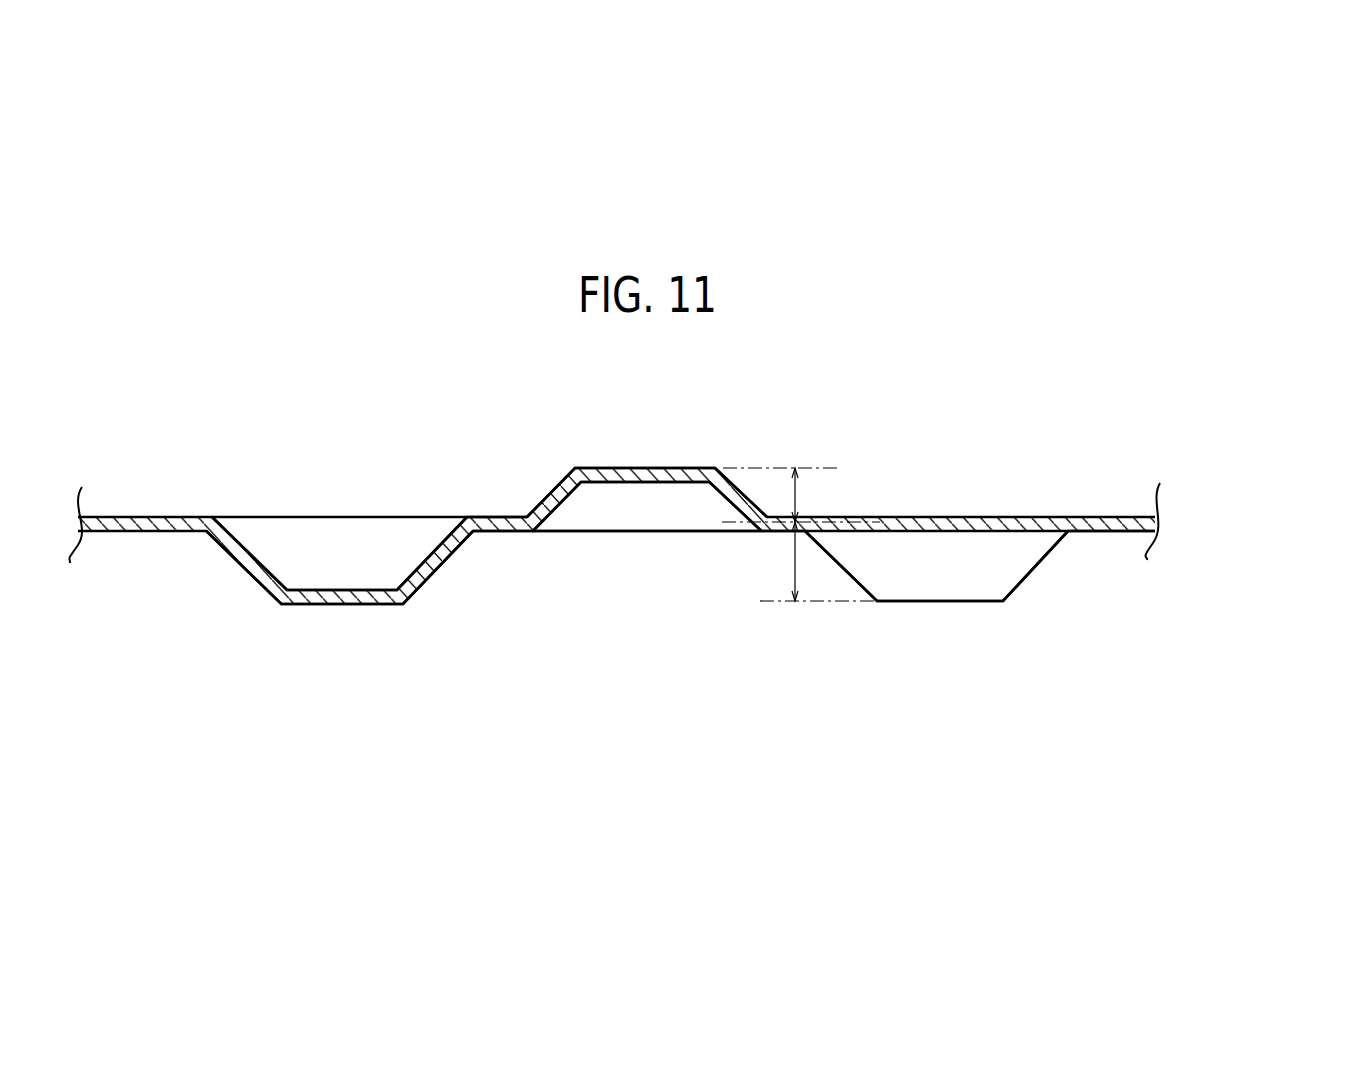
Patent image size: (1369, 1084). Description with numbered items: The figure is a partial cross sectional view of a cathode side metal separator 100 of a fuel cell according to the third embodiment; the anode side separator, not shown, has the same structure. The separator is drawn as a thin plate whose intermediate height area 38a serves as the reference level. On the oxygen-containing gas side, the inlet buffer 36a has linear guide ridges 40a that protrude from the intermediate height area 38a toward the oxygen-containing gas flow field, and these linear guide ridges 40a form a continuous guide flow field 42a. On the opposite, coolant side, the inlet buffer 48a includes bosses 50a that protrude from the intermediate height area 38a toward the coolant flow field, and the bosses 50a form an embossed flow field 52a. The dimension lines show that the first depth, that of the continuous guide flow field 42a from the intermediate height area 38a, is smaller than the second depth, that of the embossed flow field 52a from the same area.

The cathode side metal separator 100 is at (866, 391).
The inlet buffer 36a is at (1050, 481).
The intermediate height area 38a is at (920, 522).
The linear guide ridges 40a is at (655, 480).
The continuous guide flow field 42a is at (465, 490).
The inlet buffer 48a is at (1100, 570).
The bosses 50a is at (358, 598).
The embossed flow field 52a is at (543, 560).